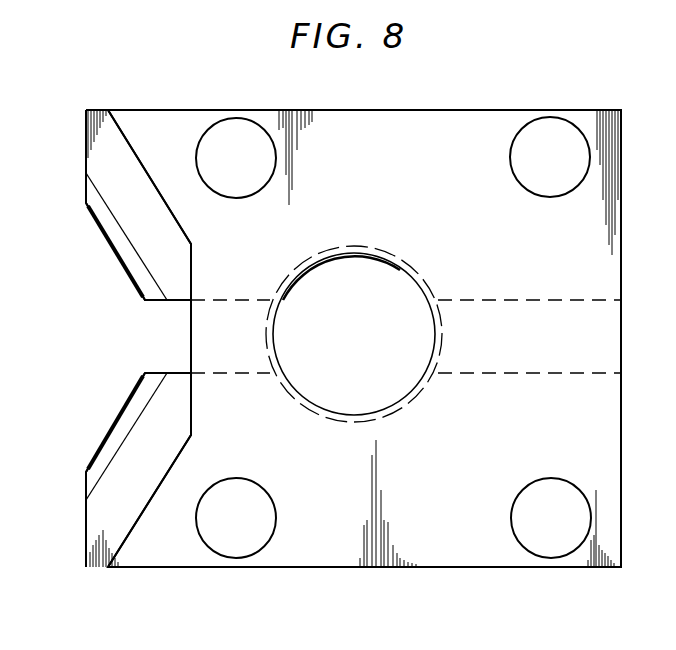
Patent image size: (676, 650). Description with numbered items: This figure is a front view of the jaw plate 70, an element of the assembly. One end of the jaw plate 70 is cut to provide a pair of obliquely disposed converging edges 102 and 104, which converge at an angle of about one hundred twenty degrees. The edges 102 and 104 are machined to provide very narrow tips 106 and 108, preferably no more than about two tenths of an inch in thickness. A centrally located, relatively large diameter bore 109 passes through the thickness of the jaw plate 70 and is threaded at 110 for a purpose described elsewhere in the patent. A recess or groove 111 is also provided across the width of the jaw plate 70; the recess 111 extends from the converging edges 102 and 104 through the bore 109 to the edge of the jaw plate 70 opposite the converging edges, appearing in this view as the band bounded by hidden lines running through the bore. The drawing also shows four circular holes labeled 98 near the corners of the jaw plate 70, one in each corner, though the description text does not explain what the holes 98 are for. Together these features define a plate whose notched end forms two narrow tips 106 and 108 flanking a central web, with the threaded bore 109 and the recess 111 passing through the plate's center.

The jaw plate 70 is at (450, 110).
The mounting holes 98 is at (249, 128).
The converging edge 102 is at (114, 269).
The converging edge 104 is at (100, 430).
The tip 106 is at (143, 285).
The tip 108 is at (135, 393).
The bore 109 is at (380, 266).
The threads 110 is at (408, 284).
The recess 111 is at (162, 336).